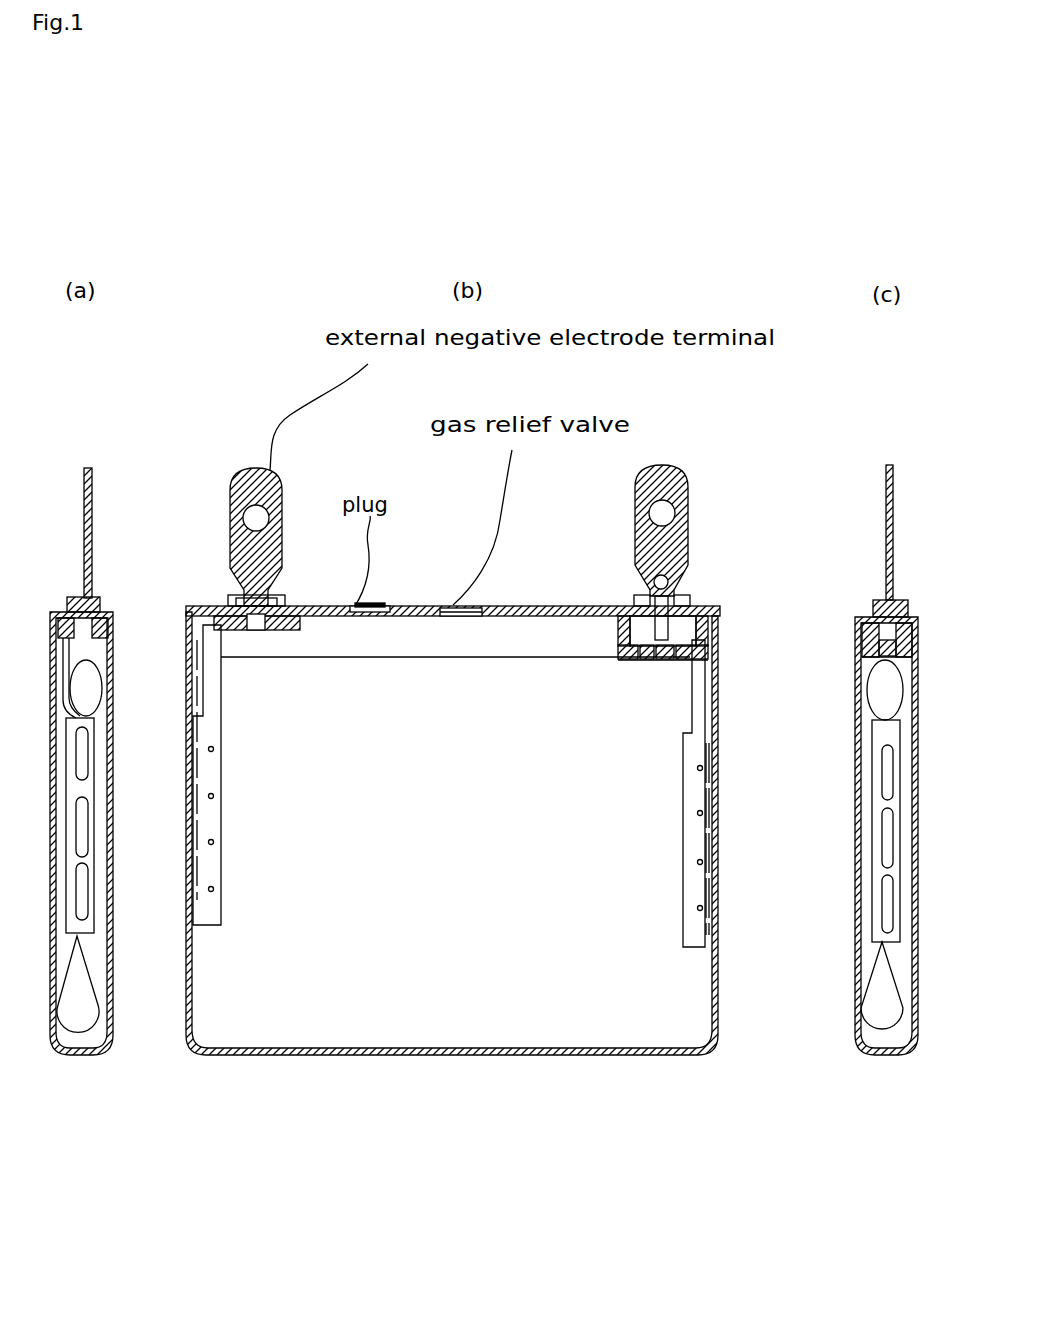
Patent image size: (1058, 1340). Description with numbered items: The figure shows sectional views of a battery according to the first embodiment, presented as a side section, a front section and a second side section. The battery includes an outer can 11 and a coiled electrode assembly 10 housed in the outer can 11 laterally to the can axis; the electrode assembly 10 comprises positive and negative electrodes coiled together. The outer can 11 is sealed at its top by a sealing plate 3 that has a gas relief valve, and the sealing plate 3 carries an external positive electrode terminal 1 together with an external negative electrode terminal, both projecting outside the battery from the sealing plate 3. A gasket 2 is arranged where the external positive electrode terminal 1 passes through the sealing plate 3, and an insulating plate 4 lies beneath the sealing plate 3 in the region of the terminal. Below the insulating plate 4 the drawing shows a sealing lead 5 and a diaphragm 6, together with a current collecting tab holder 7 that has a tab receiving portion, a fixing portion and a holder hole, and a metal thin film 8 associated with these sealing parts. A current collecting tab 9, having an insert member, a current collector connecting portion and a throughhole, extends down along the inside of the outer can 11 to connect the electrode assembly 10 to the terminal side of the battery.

The external positive electrode terminal 1 is at (673, 464).
The gasket 2 is at (690, 597).
The sealing plate 3 is at (540, 606).
The insulating plate 4 is at (618, 624).
The sealing lead 5 is at (703, 632).
The diaphragm 6 is at (642, 640).
The current collecting tab holder 7 is at (622, 638).
The metal thin film 8 is at (660, 640).
The current collecting tab 9 is at (705, 705).
The electrode assembly 10 is at (555, 995).
The outer can 11 is at (718, 823).